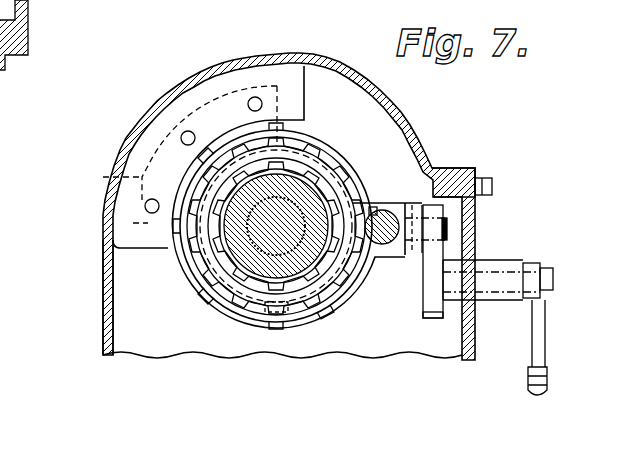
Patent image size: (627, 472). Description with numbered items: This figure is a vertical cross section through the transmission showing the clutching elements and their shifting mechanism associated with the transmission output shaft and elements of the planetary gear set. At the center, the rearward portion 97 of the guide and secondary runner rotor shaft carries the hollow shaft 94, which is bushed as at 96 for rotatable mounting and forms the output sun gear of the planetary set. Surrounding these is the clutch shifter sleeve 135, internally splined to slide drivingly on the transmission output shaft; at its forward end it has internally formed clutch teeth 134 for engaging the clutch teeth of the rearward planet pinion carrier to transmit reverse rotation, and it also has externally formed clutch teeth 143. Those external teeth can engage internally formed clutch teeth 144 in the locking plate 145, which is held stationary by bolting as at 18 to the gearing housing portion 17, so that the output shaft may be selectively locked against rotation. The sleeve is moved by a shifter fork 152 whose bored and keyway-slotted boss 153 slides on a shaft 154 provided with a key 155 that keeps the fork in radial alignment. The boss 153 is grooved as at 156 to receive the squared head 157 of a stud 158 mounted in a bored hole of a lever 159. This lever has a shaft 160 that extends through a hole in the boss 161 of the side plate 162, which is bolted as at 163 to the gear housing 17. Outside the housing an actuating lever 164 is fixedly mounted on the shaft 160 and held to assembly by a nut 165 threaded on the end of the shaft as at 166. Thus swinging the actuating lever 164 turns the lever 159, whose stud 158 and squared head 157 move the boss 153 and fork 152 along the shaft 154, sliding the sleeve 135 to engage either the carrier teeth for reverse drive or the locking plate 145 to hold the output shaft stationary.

The gearing housing portion 17 is at (402, 107).
The bolting 18 is at (108, 230).
The hollow shaft 94 is at (225, 262).
The bushing 96 is at (248, 256).
The rearward portion of the guide and secondary runner rotor shaft 97 is at (290, 252).
The internally formed clutch teeth 134 is at (202, 277).
The clutch shifter sleeve 135 is at (313, 153).
The externally formed clutch teeth 143 is at (200, 263).
The internally formed clutch teeth 144 is at (176, 226).
The locking plate 145 is at (118, 183).
The shifter fork 152 is at (350, 190).
The boss 153 is at (414, 188).
The shaft 154 is at (373, 208).
The key 155 is at (366, 202).
The groove 156 is at (397, 238).
The squared head 157 is at (414, 256).
The stud 158 is at (447, 230).
The lever 159 is at (434, 318).
The shaft 160 is at (492, 261).
The boss 161 is at (502, 260).
The side plate 162 is at (455, 167).
The bolting 163 is at (483, 178).
The actuating lever 164 is at (546, 348).
The nut 165 is at (547, 263).
The threaded end 166 is at (556, 292).